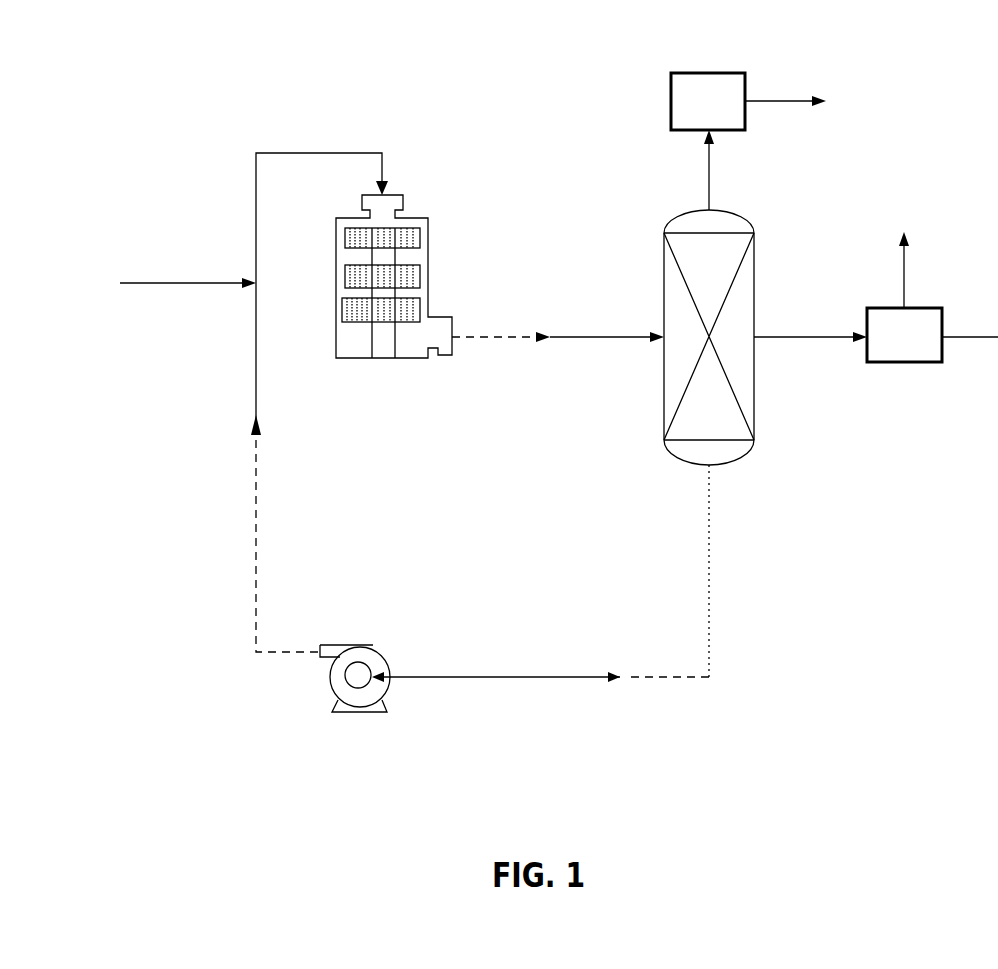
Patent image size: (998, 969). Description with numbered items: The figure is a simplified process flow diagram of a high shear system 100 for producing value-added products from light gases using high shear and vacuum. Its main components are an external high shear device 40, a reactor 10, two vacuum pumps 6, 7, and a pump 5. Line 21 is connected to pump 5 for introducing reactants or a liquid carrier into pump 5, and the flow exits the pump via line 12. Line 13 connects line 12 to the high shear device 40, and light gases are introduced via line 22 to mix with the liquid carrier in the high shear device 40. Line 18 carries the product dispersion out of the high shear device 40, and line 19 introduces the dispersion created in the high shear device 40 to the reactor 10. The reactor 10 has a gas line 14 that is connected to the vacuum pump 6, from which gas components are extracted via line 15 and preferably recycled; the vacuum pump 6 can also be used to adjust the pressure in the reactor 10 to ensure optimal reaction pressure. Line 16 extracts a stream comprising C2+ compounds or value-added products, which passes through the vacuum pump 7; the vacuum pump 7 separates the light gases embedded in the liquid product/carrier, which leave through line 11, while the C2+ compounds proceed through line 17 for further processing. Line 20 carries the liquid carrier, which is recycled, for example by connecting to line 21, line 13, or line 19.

The high shear system 100 is at (558, 394).
The pump 5 is at (357, 712).
The vacuum pump 6 is at (697, 68).
The vacuum pump 7 is at (908, 401).
The reactor 10 is at (683, 212).
The line 11 is at (922, 270).
The line 12 is at (258, 573).
The line 13 is at (258, 366).
The gas line 14 is at (729, 170).
The line 15 is at (785, 84).
The line 16 is at (790, 322).
The line 17 is at (970, 318).
The line 18 is at (503, 335).
The line 19 is at (612, 337).
The line 20 is at (706, 586).
The line 21 is at (455, 677).
The line 22 is at (188, 281).
The external high shear device 40 is at (420, 220).